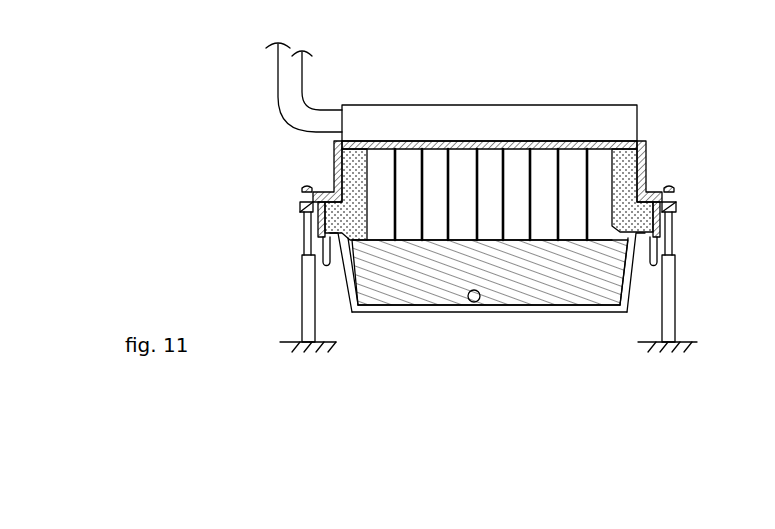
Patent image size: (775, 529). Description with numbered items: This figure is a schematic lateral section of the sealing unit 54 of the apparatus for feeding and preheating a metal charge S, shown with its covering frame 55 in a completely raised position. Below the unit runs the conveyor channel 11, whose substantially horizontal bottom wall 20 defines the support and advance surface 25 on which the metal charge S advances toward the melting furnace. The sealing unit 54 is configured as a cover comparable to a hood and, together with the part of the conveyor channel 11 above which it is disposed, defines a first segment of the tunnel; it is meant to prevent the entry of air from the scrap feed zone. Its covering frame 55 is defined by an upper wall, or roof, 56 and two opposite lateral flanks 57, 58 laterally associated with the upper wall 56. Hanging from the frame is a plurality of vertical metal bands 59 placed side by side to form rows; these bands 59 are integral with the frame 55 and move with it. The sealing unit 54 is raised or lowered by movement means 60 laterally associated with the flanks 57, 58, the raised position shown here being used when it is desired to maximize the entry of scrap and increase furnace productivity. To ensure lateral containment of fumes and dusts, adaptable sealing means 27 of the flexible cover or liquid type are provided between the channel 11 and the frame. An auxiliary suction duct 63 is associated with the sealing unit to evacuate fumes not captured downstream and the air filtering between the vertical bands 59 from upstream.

The conveyor channel 11 is at (440, 315).
The bottom wall 20 is at (520, 306).
The support and advance surface 25 is at (468, 306).
The adaptable sealing means 27 is at (336, 282).
The sealing unit 54 is at (622, 80).
The covering frame 55 is at (648, 140).
The upper wall 56 is at (448, 145).
The lateral flank 57 is at (641, 172).
The lateral flank 58 is at (339, 172).
The vertical metal bands 59 is at (407, 173).
The movement means 60 is at (293, 293).
The auxiliary suction duct 63 is at (289, 82).
The metal charge S is at (555, 278).